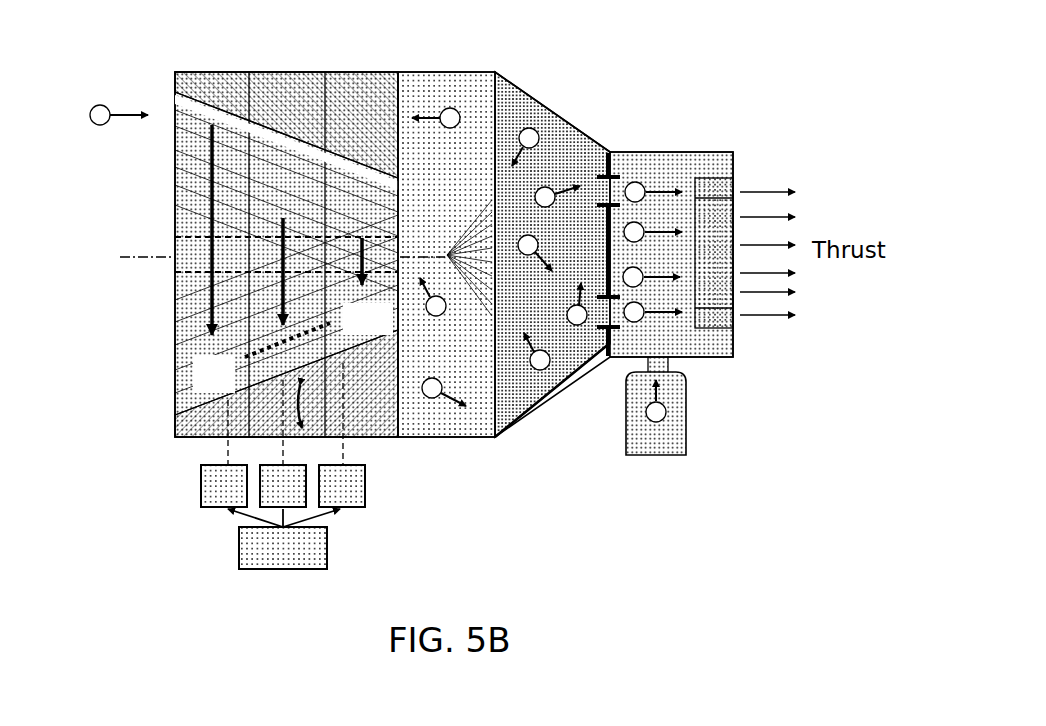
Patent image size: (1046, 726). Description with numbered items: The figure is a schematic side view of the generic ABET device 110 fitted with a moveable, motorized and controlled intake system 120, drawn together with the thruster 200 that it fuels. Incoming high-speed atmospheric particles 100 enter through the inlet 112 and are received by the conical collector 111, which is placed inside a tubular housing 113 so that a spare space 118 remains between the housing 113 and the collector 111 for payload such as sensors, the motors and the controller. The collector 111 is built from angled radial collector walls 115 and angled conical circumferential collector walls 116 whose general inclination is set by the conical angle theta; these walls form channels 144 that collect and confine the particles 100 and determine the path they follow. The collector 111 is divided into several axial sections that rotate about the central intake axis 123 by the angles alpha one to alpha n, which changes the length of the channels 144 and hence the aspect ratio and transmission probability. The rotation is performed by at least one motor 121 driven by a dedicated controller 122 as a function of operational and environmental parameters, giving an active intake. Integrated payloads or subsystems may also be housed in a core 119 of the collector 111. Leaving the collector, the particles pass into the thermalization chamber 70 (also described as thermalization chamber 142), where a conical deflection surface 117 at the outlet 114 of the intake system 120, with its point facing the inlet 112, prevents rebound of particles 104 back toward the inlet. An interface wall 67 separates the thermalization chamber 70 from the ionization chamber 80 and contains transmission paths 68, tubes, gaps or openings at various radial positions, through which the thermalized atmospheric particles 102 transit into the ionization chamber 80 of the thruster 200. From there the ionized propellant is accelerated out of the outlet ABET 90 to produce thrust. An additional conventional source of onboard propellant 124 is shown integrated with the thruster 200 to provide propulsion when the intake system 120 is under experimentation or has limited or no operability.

The ABET device 110 is at (842, 30).
The particles 100 is at (96, 104).
The inlet 112 is at (247, 240).
The housing 113 is at (208, 72).
The spare space 118 is at (283, 72).
The radial collector wall 115 is at (392, 72).
The channels 144 is at (262, 167).
The collector 111 is at (313, 203).
The central axis 123 is at (172, 262).
The core 119 is at (172, 275).
The particles 104 is at (482, 224).
The circumferential collector wall 116 is at (402, 215).
The conical deflection surface 117 is at (478, 318).
The thermalization chamber 142 is at (476, 94).
The thermalized atmospheric particles 102 is at (570, 259).
The transmission paths 68 is at (571, 279).
The thermalization chamber 70 is at (575, 153).
The interface wall 67 is at (608, 352).
The outlet 114 is at (606, 348).
The ionization chamber 80 is at (725, 226).
The outlet ABET 90 is at (738, 187).
The source of onboard propellant 124 is at (655, 460).
The thruster 200 is at (698, 482).
The motor 121 is at (200, 488).
The controller 122 is at (237, 547).
The intake system 120 is at (441, 512).